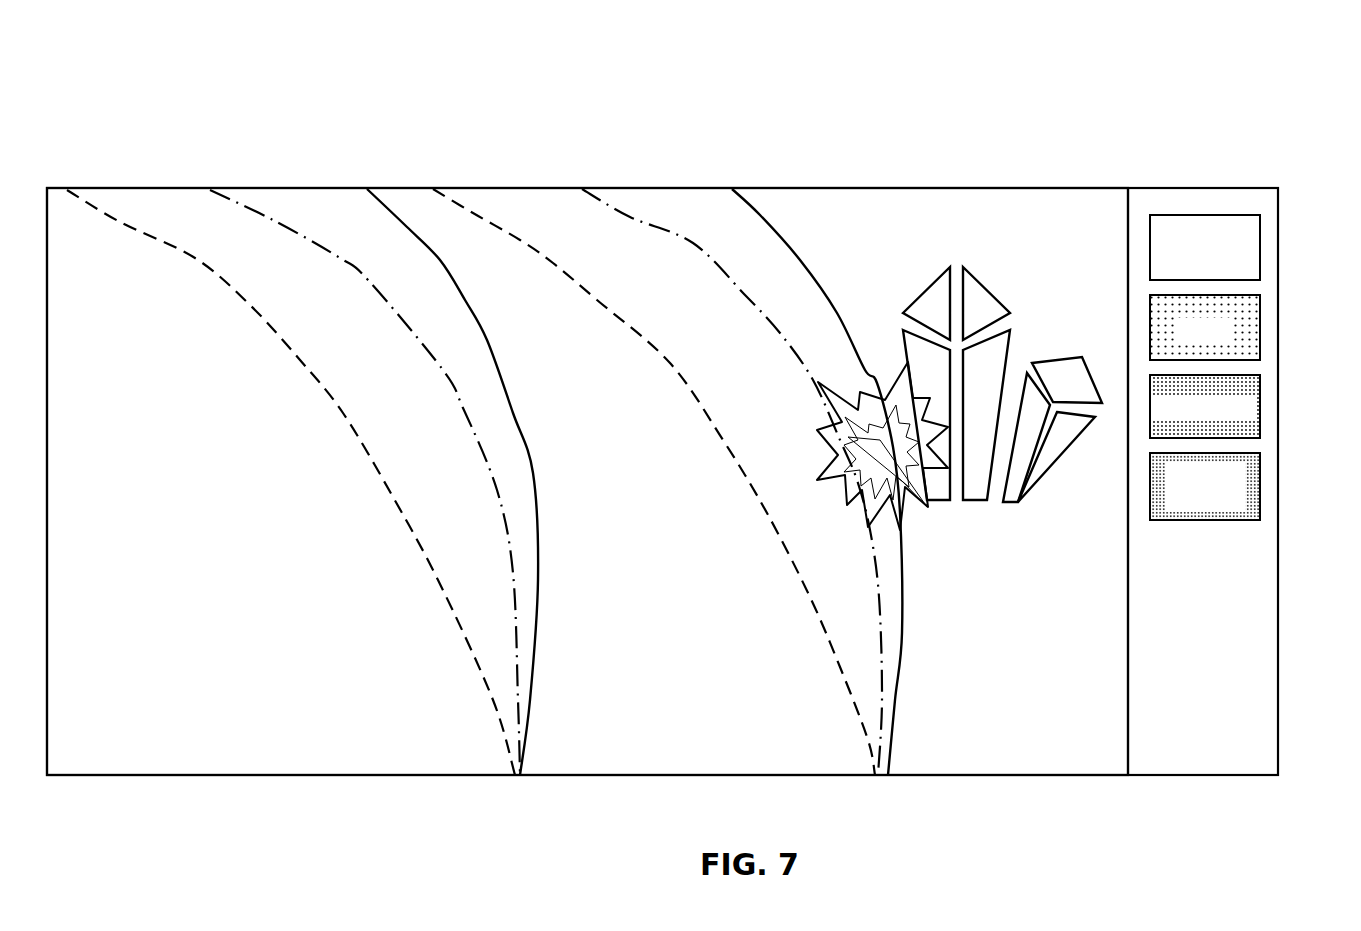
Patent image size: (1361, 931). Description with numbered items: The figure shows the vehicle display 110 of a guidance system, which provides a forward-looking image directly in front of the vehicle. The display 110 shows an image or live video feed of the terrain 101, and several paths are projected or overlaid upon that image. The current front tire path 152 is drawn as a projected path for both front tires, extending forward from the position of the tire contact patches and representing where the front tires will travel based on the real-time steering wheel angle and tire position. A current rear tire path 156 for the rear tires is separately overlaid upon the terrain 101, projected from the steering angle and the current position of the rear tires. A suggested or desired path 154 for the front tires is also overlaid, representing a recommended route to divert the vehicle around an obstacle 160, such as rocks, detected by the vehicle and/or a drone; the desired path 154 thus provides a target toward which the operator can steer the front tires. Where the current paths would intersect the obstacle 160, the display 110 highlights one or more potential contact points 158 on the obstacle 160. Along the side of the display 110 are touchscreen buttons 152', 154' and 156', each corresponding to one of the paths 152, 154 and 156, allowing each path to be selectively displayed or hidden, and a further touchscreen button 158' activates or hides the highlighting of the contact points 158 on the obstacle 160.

The display 110 is at (272, 63).
The terrain 101 is at (268, 652).
The current front tire path 152 is at (634, 440).
The suggested or desired path 154 is at (471, 439).
The current rear tire path 156 is at (546, 440).
The contact points 158 is at (897, 323).
The obstacle 160 is at (997, 358).
The touchscreen button 152' is at (1255, 247).
The touchscreen button 156' is at (1255, 327).
The touchscreen button 154' is at (1255, 404).
The touchscreen button 158' is at (1255, 485).